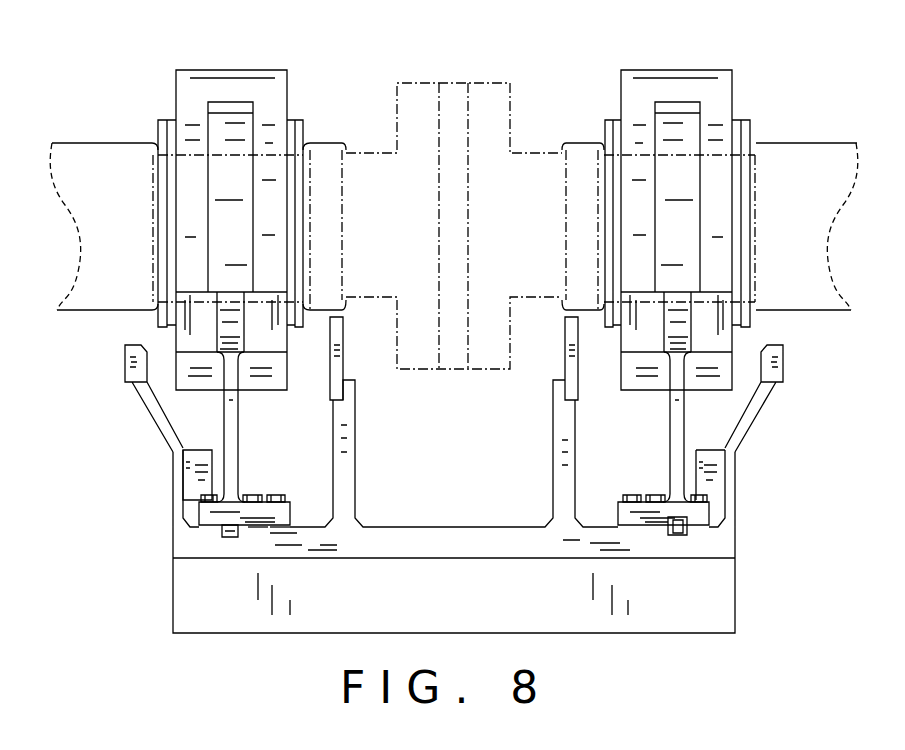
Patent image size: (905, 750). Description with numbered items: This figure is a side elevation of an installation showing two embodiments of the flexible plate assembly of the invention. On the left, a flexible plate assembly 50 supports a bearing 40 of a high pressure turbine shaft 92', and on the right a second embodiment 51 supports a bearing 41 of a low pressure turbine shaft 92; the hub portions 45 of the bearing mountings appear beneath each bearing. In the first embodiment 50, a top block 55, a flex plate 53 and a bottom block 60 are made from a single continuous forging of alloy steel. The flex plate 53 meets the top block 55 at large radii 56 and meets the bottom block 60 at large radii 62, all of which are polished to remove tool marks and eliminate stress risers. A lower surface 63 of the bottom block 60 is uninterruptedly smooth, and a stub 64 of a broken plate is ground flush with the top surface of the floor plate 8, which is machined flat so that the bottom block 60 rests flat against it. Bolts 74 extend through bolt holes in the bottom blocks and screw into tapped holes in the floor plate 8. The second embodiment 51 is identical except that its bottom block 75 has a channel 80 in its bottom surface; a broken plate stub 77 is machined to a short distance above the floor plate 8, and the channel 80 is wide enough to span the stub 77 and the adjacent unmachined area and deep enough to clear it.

The floor plate 8 is at (560, 550).
The bearing 40 is at (197, 140).
The bearing 41 is at (712, 140).
The hub 45 is at (197, 292).
The flexible plate assembly 50 is at (140, 322).
The flex plate assembly of second embodiment 51 is at (743, 342).
The flex plate 53 is at (223, 405).
The top block 55 is at (200, 345).
The large radii 56 is at (240, 357).
The bottom block 60 is at (258, 527).
The large radii 62 is at (240, 500).
The lower surface 63 is at (280, 527).
The stub 64 is at (227, 538).
The bolts 74 is at (273, 500).
The bottom block 75 is at (623, 510).
The broken plate stub 77 is at (683, 535).
The channel 80 is at (667, 535).
The low pressure turbine shaft 92 is at (454, 208).
The high pressure turbine shaft 92' is at (416, 200).